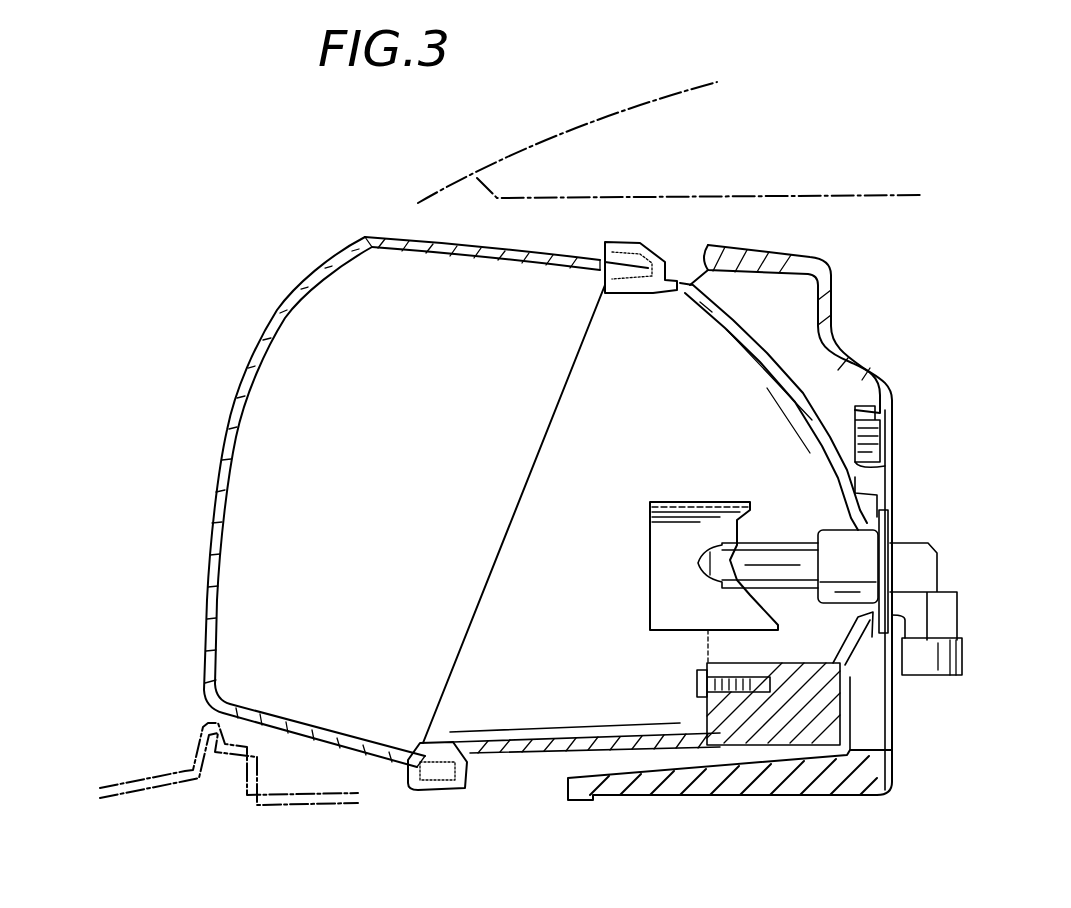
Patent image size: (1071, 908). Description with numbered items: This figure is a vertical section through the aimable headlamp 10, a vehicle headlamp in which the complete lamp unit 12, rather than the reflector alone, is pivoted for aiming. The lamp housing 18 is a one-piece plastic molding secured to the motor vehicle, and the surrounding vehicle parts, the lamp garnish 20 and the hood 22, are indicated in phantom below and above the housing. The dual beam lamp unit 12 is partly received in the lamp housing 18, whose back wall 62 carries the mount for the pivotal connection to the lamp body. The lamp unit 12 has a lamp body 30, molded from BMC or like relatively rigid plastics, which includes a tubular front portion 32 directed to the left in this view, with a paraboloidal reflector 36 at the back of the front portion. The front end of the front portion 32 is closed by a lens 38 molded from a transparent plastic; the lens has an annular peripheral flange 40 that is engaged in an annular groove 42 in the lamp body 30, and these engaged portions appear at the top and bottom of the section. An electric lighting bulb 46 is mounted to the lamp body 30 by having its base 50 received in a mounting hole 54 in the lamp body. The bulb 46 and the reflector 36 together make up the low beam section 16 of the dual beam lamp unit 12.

The aimable headlamp 10 is at (345, 215).
The lamp unit 12 is at (359, 479).
The low beam section 16 is at (278, 423).
The lamp housing 18 is at (757, 556).
The lamp garnish 20 is at (158, 777).
The hood 22 is at (527, 150).
The lamp body 30 is at (680, 277).
The tubular front portion 32 is at (518, 755).
The paraboloidal reflector 36 is at (637, 531).
The lens 38 is at (213, 503).
The annular peripheral flange 40 is at (471, 243).
The annular groove 42 is at (442, 790).
The electric lighting bulb 46 is at (778, 552).
The bulb base 50 is at (827, 603).
The mounting hole 54 is at (893, 520).
The back wall 62 is at (892, 388).